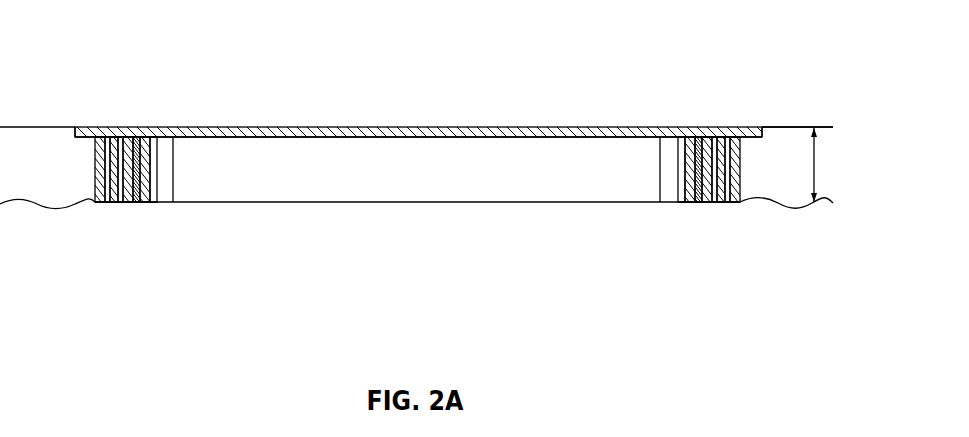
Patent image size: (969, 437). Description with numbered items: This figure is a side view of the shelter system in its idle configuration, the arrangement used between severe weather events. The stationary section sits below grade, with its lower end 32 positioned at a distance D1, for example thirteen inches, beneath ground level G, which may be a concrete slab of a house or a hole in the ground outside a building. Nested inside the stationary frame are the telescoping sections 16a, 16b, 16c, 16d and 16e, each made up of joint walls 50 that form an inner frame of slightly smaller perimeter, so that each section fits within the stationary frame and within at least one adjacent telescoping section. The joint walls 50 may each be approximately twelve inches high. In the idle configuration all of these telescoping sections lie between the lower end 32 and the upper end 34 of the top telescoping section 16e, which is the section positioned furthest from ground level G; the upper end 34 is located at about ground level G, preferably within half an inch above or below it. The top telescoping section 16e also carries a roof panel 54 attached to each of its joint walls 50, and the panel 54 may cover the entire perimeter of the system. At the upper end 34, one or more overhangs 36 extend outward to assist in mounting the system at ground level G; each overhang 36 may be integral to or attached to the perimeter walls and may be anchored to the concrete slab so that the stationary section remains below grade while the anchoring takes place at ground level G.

The telescoping section 16a is at (102, 127).
The telescoping section 16b is at (111, 134).
The telescoping section 16c is at (128, 135).
The telescoping section 16d is at (136, 137).
The top telescoping section 16e is at (144, 137).
The lower end 32 is at (585, 207).
The upper end 34 is at (578, 121).
The overhang 36 is at (77, 120).
The joint wall 50 is at (117, 197).
The roof panel 54 is at (548, 133).
The ground level G is at (826, 127).
The distance D1 is at (815, 165).